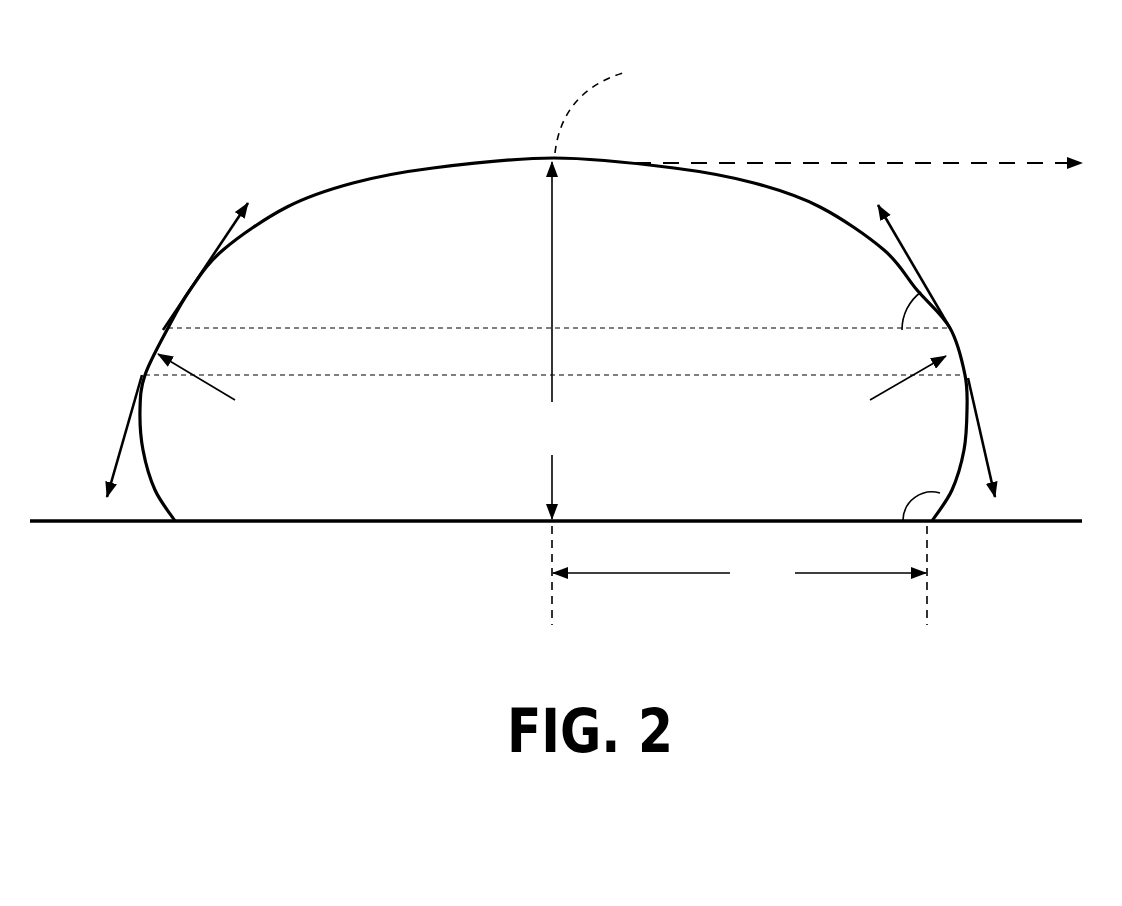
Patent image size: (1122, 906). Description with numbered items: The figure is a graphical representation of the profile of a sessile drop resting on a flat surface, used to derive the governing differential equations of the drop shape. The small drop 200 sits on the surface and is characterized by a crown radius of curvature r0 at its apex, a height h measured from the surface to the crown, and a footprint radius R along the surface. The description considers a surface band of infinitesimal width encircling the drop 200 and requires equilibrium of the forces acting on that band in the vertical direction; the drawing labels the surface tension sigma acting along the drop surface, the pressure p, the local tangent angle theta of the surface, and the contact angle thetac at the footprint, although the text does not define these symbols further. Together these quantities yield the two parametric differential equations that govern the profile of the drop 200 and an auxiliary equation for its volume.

The drop 200 is at (345, 150).
The height h is at (548, 340).
The footprint radius R is at (739, 575).
The crown radius of curvature r0 is at (610, 107).
The surface tension sigma is at (551, 350).
The pressure p is at (552, 396).
The local tangent angle theta is at (875, 302).
The contact angle thetac is at (921, 489).